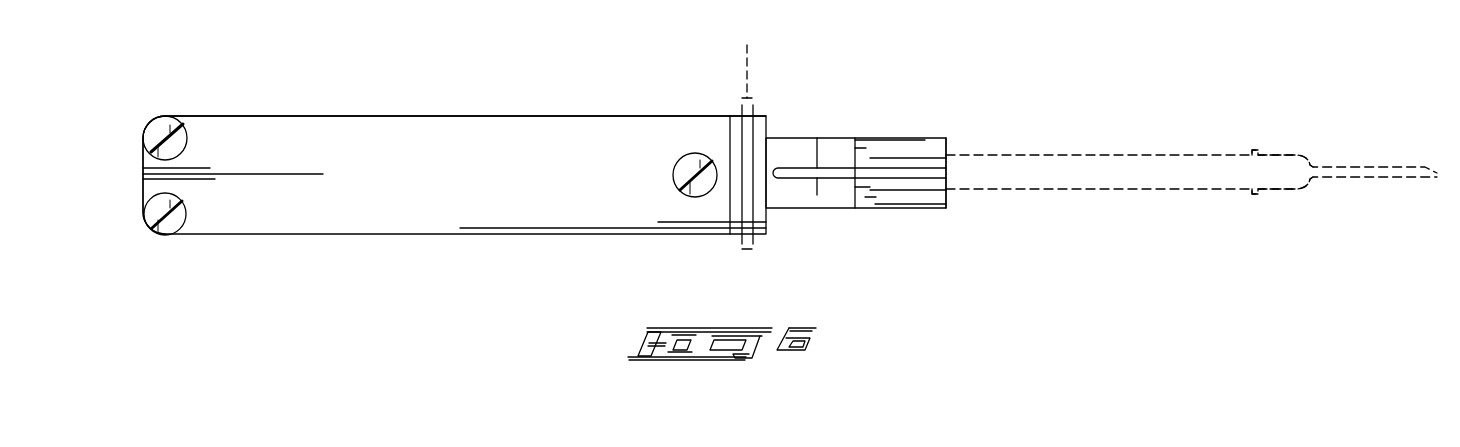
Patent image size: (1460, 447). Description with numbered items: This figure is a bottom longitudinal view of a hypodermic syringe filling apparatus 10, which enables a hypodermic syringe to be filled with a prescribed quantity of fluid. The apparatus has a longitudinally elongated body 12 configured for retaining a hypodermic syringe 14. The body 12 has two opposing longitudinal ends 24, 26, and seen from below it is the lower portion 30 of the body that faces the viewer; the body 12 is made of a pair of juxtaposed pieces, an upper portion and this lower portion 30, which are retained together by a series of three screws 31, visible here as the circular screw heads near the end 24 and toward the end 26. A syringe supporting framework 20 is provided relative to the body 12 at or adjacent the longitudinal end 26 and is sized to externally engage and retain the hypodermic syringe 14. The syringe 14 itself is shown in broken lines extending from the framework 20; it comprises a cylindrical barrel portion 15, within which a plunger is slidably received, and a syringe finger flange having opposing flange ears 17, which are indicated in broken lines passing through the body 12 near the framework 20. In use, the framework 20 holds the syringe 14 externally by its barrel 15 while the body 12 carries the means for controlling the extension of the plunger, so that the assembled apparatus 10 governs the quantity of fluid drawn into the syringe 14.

The hypodermic syringe filling apparatus 10 is at (935, 43).
The longitudinally elongated body 12 is at (603, 110).
The hypodermic syringe 14 is at (1065, 148).
The cylindrical barrel portion 15 is at (1120, 172).
The flange ears 17 is at (749, 252).
The syringe supporting framework 20 is at (879, 195).
The longitudinal end 24 is at (122, 215).
The longitudinal end 26 is at (963, 216).
The lower portion 30 is at (402, 116).
The screws 31 is at (152, 133).